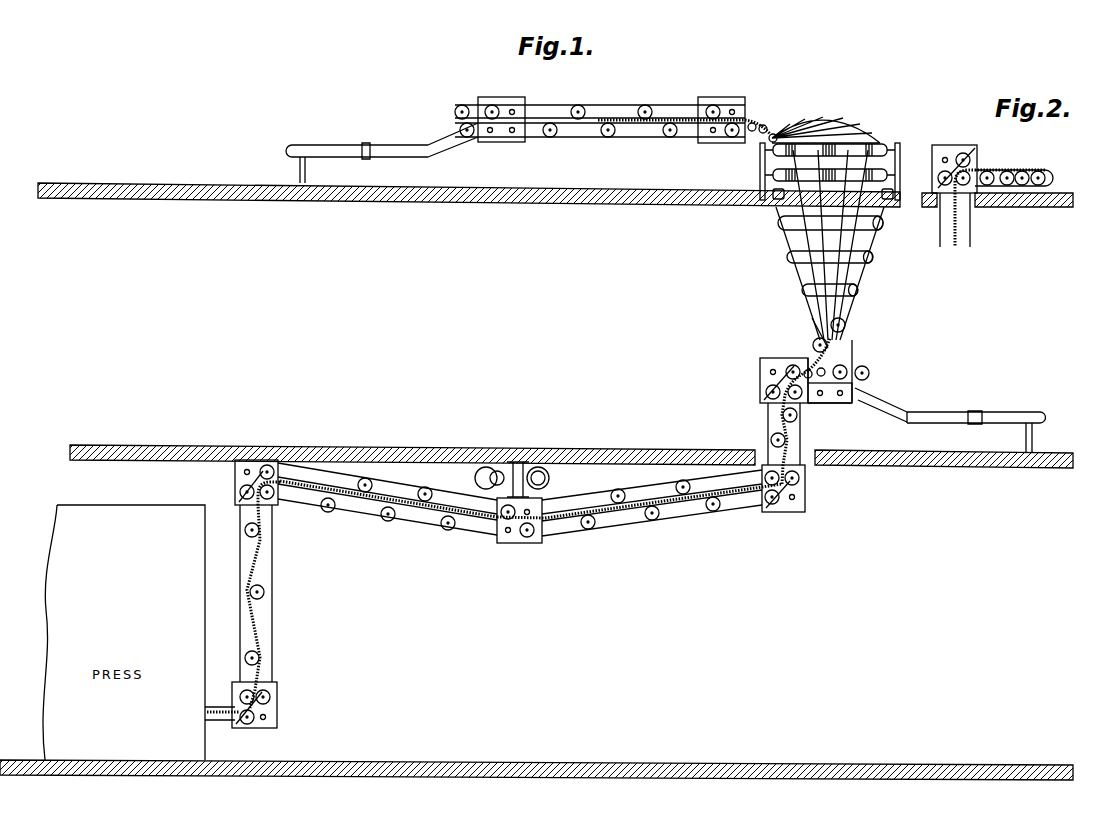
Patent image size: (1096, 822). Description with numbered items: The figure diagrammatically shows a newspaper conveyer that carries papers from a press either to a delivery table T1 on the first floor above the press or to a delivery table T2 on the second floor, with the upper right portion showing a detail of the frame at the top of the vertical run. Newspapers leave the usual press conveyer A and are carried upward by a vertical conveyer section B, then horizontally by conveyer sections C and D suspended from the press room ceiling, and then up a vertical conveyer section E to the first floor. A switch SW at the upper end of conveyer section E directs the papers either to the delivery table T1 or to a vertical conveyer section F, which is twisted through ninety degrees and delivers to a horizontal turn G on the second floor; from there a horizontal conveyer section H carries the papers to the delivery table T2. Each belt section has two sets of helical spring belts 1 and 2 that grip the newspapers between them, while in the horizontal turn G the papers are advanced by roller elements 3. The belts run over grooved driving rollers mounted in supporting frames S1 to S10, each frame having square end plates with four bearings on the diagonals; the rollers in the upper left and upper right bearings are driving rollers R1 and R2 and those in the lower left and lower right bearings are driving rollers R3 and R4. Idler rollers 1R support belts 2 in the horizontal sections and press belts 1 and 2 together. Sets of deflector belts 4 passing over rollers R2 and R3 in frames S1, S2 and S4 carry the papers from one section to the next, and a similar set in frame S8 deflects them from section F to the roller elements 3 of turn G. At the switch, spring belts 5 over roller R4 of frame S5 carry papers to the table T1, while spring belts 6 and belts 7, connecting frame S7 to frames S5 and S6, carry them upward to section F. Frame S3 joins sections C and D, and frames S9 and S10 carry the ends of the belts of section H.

In FIG. 1, the driving roller R1 is at (493, 104).
In FIG. 1, the driving roller R2 is at (275, 470).
In FIG. 2, the driving roller R2 is at (966, 152).
In FIG. 1, the driving roller R3 is at (242, 498).
In FIG. 2, the driving roller R3 is at (938, 178).
In FIG. 1, the driving roller R4 is at (274, 500).
In FIG. 2, the driving roller R4 is at (962, 186).
In FIG. 1, the supporting frame S1 is at (255, 733).
In FIG. 1, the supporting frame S2 is at (236, 476).
In FIG. 1, the supporting frame S3 is at (512, 544).
In FIG. 1, the supporting frame S4 is at (785, 514).
In FIG. 1, the supporting frame S5 is at (760, 378).
In FIG. 1, the supporting frame S6 is at (867, 392).
In FIG. 1, the supporting frame S7 is at (815, 332).
In FIG. 1, the supporting frame S8 is at (900, 164).
In FIG. 1, the supporting frame S9 is at (713, 144).
In FIG. 1, the supporting frame S10 is at (500, 143).
In FIG. 1, the delivery table T1 is at (970, 412).
In FIG. 1, the delivery table T2 is at (352, 150).
In FIG. 1, the helical spring belts 1 is at (668, 106).
In FIG. 2, the helical spring belts 1 is at (940, 236).
In FIG. 1, the helical spring belts 2 is at (640, 141).
In FIG. 2, the helical spring belts 2 is at (970, 238).
In FIG. 1, the roller elements 3 is at (762, 134).
In FIG. 1, the deflector belts 4 is at (244, 476).
In FIG. 2, the deflector belts 4 is at (945, 156).
In FIG. 1, the spring belts 5 is at (846, 404).
In FIG. 1, the spring belts 6 is at (803, 363).
In FIG. 1, the belts 7 is at (847, 350).
In FIG. 1, the idler rollers 1R is at (550, 137).
In FIG. 1, the press conveyer A is at (222, 725).
In FIG. 1, the vertical conveyer section B is at (272, 597).
In FIG. 1, the conveyer section C is at (373, 517).
In FIG. 1, the conveyer section D is at (642, 521).
In FIG. 1, the vertical conveyer section E is at (801, 440).
In FIG. 1, the vertical conveyer section F is at (858, 290).
In FIG. 1, the horizontal turn G is at (830, 125).
In FIG. 1, the horizontal conveyer section H is at (611, 96).
In FIG. 1, the switch SW is at (830, 384).